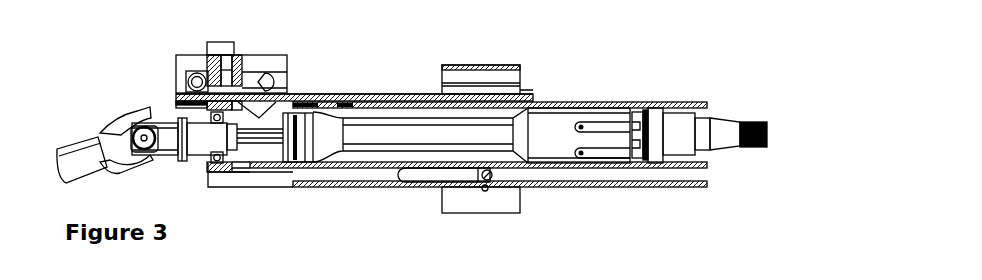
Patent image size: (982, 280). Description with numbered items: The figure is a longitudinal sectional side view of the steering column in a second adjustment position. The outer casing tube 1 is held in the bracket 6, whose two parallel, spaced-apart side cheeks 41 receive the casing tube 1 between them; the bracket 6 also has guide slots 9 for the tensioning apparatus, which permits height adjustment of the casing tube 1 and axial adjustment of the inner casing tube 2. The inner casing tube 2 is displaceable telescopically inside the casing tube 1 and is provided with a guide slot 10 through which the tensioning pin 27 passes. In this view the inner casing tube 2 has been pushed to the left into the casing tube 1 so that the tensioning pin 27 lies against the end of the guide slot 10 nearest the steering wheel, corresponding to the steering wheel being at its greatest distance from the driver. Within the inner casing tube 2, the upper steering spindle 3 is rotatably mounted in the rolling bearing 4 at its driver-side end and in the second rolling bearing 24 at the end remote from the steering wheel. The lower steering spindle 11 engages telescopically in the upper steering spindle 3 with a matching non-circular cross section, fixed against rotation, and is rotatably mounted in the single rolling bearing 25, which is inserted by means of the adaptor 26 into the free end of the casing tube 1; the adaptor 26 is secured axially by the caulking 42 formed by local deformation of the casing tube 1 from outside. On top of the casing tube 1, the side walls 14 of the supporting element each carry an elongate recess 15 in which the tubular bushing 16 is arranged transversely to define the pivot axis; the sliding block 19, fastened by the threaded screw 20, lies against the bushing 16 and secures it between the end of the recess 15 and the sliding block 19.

The casing tube 1 is at (406, 95).
The inner casing tube 2 is at (615, 183).
The upper steering spindle 3 is at (730, 130).
The rolling bearing 4 is at (658, 150).
The bracket 6 is at (479, 65).
The guide slots 9 is at (482, 190).
The guide slot 10 is at (422, 172).
The lower steering spindle 11 is at (203, 140).
The side walls 14 is at (296, 93).
The recess 15 is at (281, 82).
The bushing 16 is at (189, 75).
The sliding block 19 is at (241, 72).
The threaded screw 20 is at (216, 47).
The second rolling bearing 24 is at (300, 157).
The rolling bearing 25 is at (224, 163).
The adaptor 26 is at (233, 158).
The tensioning pin 27 is at (468, 186).
The side cheeks 41 is at (517, 198).
The caulking 42 is at (259, 117).